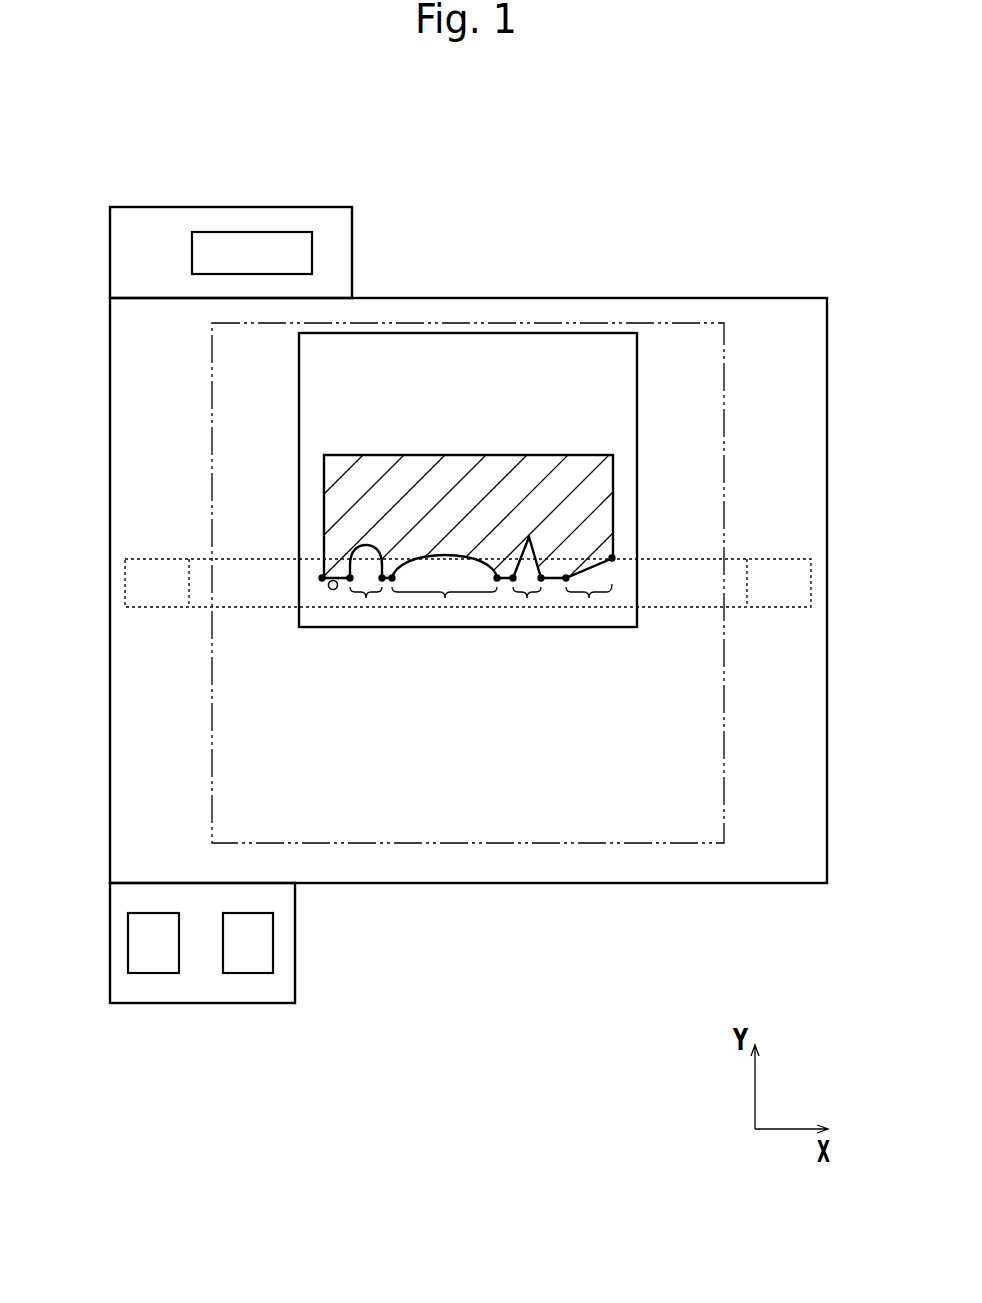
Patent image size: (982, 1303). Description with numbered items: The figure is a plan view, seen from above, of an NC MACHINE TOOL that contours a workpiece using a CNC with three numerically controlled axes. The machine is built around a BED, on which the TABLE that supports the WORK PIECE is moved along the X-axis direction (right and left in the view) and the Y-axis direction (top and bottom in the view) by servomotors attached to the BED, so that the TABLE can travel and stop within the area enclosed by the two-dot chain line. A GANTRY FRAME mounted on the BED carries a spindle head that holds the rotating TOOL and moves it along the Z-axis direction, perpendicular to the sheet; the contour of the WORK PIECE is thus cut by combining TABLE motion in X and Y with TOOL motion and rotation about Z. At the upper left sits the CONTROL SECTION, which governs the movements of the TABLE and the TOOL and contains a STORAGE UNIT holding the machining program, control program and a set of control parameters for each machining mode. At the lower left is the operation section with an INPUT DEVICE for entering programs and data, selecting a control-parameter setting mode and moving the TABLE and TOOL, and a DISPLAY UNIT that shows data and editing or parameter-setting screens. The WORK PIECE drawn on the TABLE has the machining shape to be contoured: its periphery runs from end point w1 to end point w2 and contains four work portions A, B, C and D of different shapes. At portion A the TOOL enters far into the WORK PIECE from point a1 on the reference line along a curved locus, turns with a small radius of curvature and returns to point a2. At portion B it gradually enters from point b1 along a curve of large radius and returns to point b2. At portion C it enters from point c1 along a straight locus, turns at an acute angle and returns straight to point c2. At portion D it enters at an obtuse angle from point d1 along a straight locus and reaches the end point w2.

The NC machine tool NC MACHINE TOOL is at (575, 952).
The control section CONTROL SECTION is at (138, 227).
The storage unit STORAGE UNIT is at (257, 248).
The input device INPUT DEVICE is at (147, 953).
The display unit DISPLAY UNIT is at (253, 948).
The bed BED is at (615, 313).
The table TABLE is at (602, 403).
The gantry frame GANTRY FRAME is at (243, 598).
The workpiece WORK PIECE is at (398, 473).
The tool TOOL is at (327, 592).
The work portion A is at (366, 606).
The work portion B is at (444, 606).
The work portion C is at (527, 606).
The work portion D is at (589, 604).
The end point w1 is at (322, 578).
The end point w2 is at (612, 558).
The point a1 is at (350, 578).
The point a2 is at (382, 578).
The point b1 is at (392, 578).
The point b2 is at (497, 578).
The point c1 is at (513, 578).
The point c2 is at (541, 578).
The point d1 is at (566, 578).